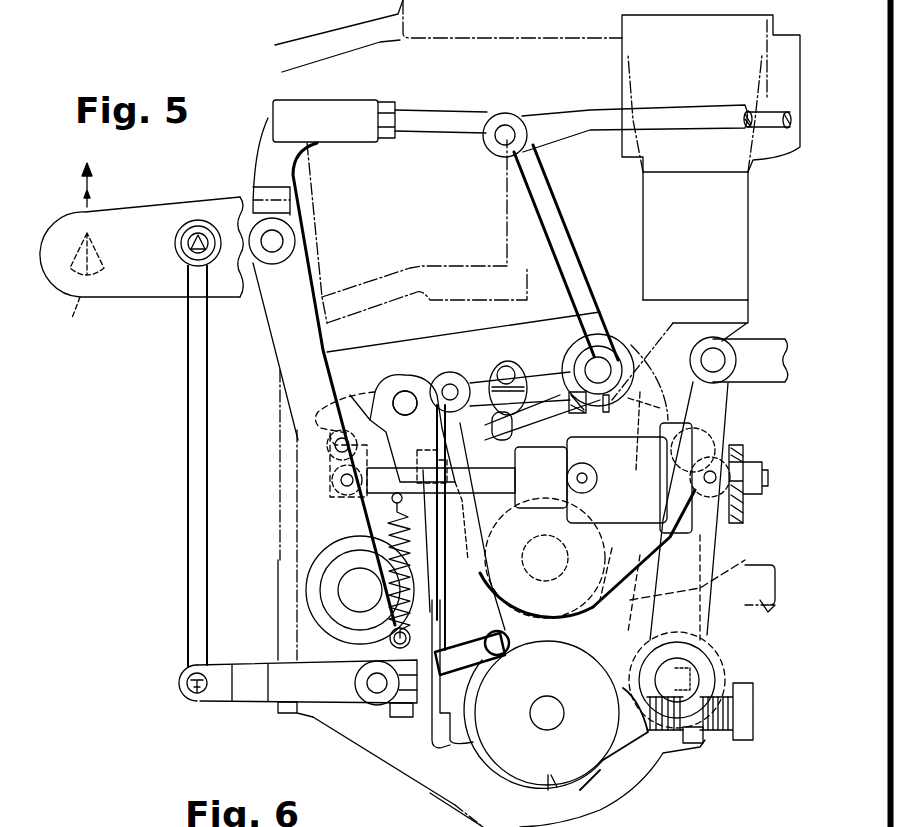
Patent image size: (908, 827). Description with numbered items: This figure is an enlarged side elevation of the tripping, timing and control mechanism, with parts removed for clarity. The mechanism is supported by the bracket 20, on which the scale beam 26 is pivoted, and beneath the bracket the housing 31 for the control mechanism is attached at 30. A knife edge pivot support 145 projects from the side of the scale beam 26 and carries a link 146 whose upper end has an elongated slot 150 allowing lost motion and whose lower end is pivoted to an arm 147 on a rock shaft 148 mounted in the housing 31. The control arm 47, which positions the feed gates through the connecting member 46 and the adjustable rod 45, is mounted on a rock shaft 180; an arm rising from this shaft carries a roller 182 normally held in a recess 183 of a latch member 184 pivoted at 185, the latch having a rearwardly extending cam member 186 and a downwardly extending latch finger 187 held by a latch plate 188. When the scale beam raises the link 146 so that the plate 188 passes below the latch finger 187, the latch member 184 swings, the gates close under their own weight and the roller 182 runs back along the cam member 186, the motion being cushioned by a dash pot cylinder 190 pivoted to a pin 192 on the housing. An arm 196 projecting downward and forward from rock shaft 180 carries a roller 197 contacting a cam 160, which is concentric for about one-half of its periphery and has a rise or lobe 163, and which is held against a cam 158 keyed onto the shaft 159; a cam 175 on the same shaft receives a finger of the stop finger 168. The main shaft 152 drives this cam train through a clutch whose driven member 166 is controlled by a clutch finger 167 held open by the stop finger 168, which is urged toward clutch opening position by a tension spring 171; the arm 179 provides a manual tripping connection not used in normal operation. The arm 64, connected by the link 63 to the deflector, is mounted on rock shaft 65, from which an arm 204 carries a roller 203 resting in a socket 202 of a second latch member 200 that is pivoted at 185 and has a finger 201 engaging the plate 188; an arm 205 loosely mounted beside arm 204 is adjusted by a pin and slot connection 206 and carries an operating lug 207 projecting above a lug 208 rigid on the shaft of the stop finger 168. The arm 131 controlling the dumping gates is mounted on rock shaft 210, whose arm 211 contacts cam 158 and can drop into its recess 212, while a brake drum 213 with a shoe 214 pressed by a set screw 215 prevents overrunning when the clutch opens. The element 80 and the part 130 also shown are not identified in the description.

The bracket 20 is at (758, 277).
The scale beam 26 is at (158, 216).
The attachment point of housing 30 is at (740, 304).
The housing 31 is at (667, 765).
The rod 45 is at (457, 115).
The connecting member 46 is at (262, 158).
The control arm 47 is at (282, 318).
The link 63 is at (692, 114).
The arm 64 is at (562, 233).
The rock shaft 65 is at (612, 352).
The indicator 80 is at (64, 318).
The support bar 130 is at (764, 350).
The arm 131 is at (720, 404).
The knife edge pivot support 145 is at (188, 243).
The link 146 is at (194, 396).
The arm 147 is at (222, 693).
The rock shaft 148 is at (375, 700).
The elongated slot 150 is at (192, 258).
The main shaft 152 is at (764, 603).
The cam 158 is at (563, 652).
The shaft 159 is at (552, 566).
The cam 160 is at (587, 621).
The rise or lobe 163 is at (650, 460).
The driven member 166 is at (510, 780).
The clutch finger 167 is at (467, 733).
The stop finger 168 is at (437, 733).
The tension spring 171 is at (388, 520).
The cam 175 is at (520, 502).
The arm 179 is at (649, 417).
The rock shaft 180 is at (352, 612).
The roller 182 is at (332, 452).
The recess 183 is at (392, 470).
The latch member 184 is at (370, 362).
The pivot pin 185 is at (404, 392).
The cam member 186 is at (352, 392).
The latch finger 187 is at (436, 643).
The latch plate 188 is at (468, 674).
The cylinder 190 is at (612, 505).
The pin 192 is at (745, 458).
The arm 196 is at (507, 598).
The roller 197 is at (473, 677).
The latch member 200 is at (368, 420).
The finger 201 is at (513, 623).
The socket 202 is at (455, 418).
The roller 203 is at (441, 386).
The arm 204 is at (455, 388).
The arm 205 is at (582, 432).
The pin and slot connection 206 is at (512, 380).
The operating lug 207 is at (510, 420).
The lug 208 is at (522, 432).
The rock shaft 210 is at (686, 674).
The arm 211 is at (707, 568).
The recess 212 is at (648, 598).
The brake drum 213 is at (553, 798).
The shoe 214 is at (614, 750).
The set screw 215 is at (745, 728).